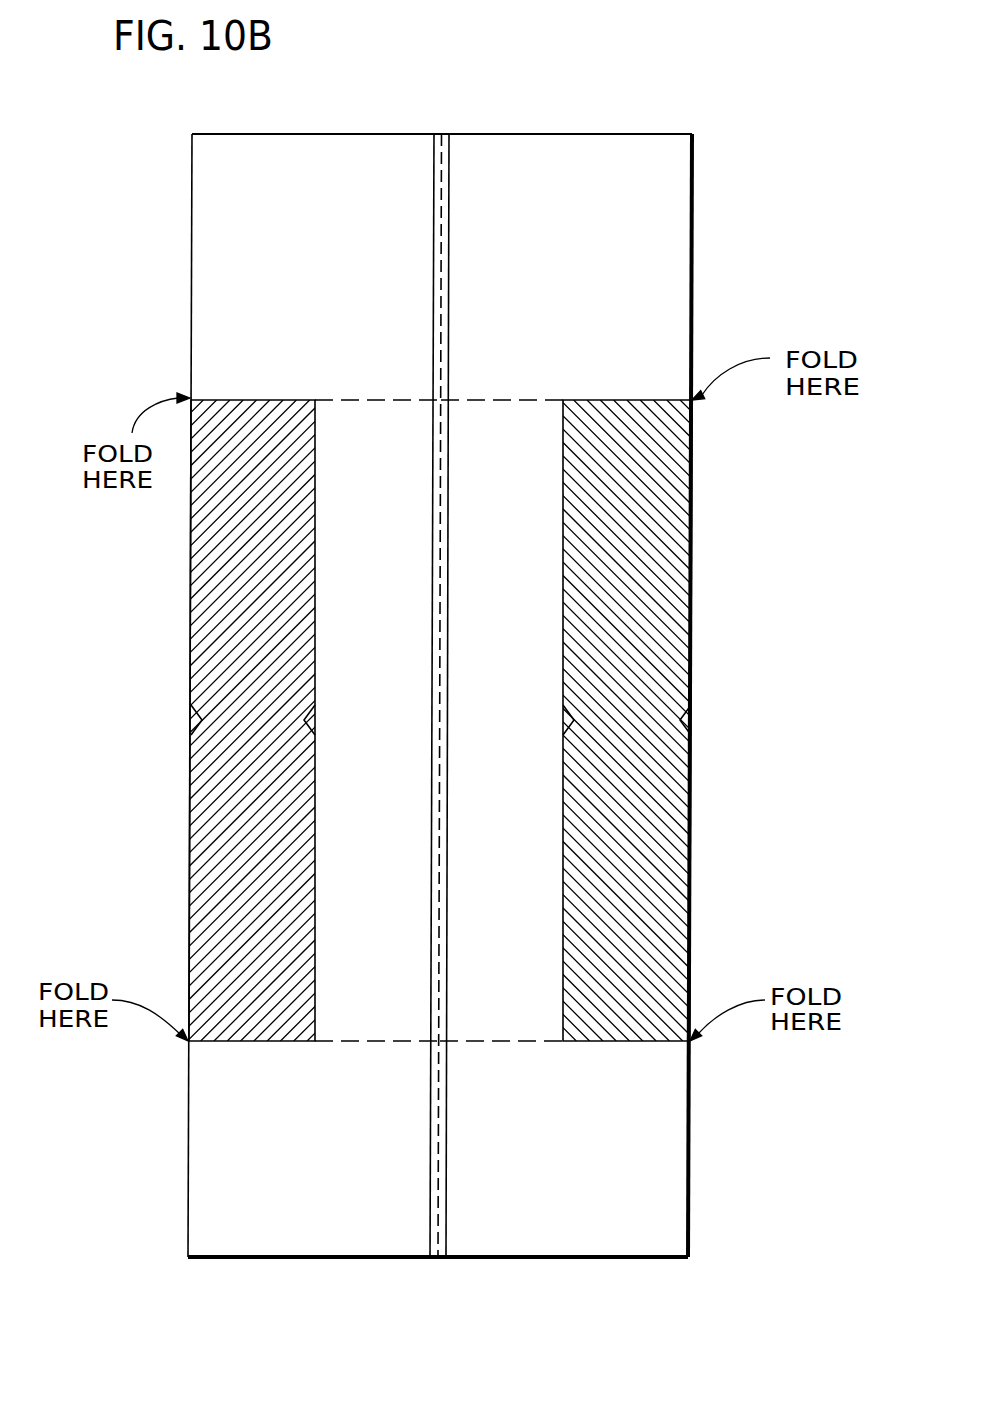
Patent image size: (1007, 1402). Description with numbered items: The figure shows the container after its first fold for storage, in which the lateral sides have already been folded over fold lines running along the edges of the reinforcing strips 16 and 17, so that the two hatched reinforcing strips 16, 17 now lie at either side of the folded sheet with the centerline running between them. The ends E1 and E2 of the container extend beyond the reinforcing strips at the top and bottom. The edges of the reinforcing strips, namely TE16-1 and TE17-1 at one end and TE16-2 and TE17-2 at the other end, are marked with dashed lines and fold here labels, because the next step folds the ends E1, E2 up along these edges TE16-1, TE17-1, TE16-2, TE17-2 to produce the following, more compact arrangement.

The end E1 is at (378, 134).
The end E2 is at (495, 1260).
The edge of reinforcing strip TE16-1 is at (265, 392).
The edge of reinforcing strip TE17-1 is at (619, 395).
The edge of reinforcing strip TE16-2 is at (260, 1050).
The edge of reinforcing strip TE17-2 is at (613, 1050).
The reinforcing strip 16 is at (222, 632).
The reinforcing strip 17 is at (665, 555).